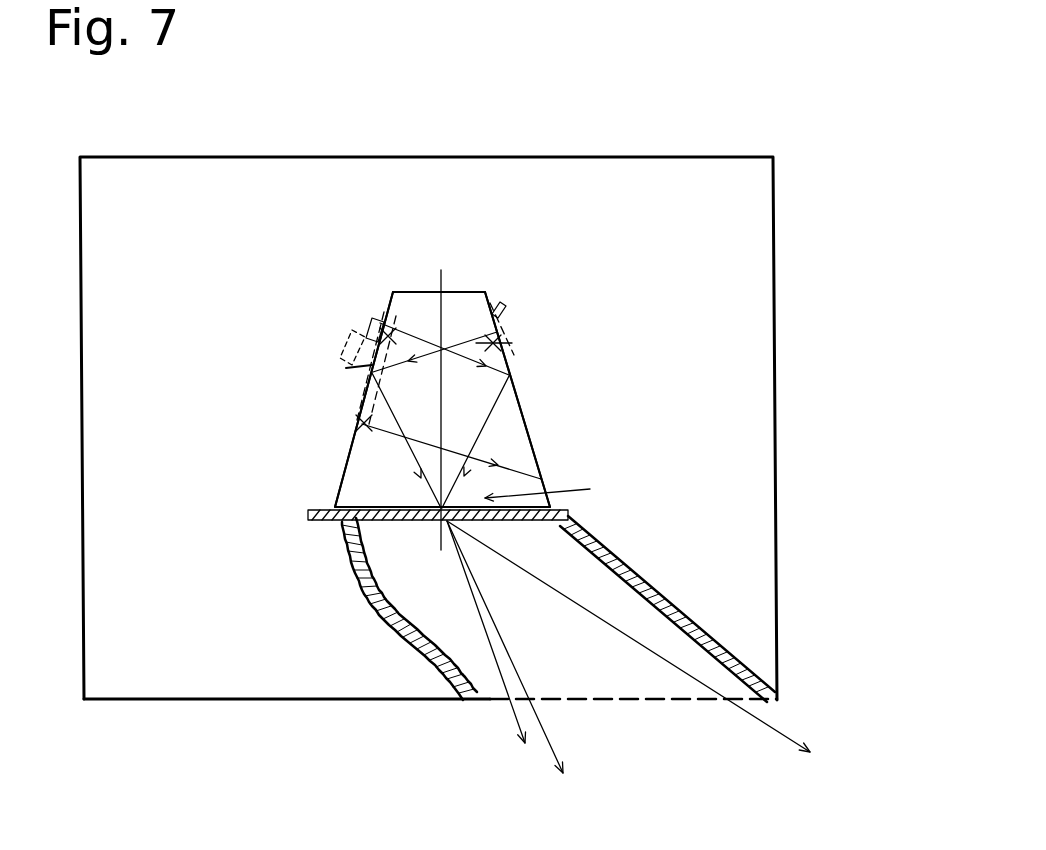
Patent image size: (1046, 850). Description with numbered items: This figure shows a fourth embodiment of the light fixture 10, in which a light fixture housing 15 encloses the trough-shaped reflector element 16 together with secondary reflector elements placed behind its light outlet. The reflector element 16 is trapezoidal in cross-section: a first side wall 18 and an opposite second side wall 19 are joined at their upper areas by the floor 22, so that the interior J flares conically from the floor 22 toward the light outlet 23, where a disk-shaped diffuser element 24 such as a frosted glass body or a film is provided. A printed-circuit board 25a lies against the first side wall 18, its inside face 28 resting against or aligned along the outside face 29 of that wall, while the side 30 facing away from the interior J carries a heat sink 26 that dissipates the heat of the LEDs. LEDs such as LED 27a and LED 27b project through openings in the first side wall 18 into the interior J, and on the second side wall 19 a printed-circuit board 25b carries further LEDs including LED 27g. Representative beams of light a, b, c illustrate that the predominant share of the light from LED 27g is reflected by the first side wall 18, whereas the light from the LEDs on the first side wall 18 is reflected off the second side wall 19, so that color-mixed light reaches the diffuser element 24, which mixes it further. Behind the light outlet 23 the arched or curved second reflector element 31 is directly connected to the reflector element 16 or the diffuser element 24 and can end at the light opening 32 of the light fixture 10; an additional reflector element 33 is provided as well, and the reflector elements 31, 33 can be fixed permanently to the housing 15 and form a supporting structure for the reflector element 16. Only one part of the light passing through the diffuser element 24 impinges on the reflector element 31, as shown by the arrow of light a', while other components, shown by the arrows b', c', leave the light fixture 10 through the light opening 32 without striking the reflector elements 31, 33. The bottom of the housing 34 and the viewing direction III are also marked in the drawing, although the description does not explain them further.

The light fixture 10 is at (811, 128).
The light fixture housing 15 is at (640, 157).
The reflector element 16 is at (653, 387).
The first side wall 18 is at (343, 480).
The second side wall 19 is at (527, 433).
The floor 22 is at (472, 292).
The light outlet 23 is at (367, 553).
The diffuser element 24 is at (323, 524).
The printed-circuit board 25a is at (360, 325).
The printed-circuit board 25b is at (505, 312).
The heat sink 26 is at (350, 362).
The LED 27a is at (390, 310).
The LED 27b is at (352, 425).
The LED 27g is at (508, 352).
The inside face 28 is at (343, 393).
The outside face 29 is at (340, 370).
The side of the printed-circuit board 30 is at (356, 339).
The second reflector element 31 is at (385, 643).
The light opening 32 is at (660, 700).
The reflector element 33 is at (672, 612).
The housing bottom 34 is at (150, 699).
The section view direction III is at (340, 372).
The beam of light a is at (363, 378).
The beam of light b is at (492, 376).
The beam of light c is at (427, 463).
The arrow of light a' is at (365, 665).
The arrow of light b' is at (533, 665).
The arrow of light c' is at (628, 665).
The interior J is at (513, 453).